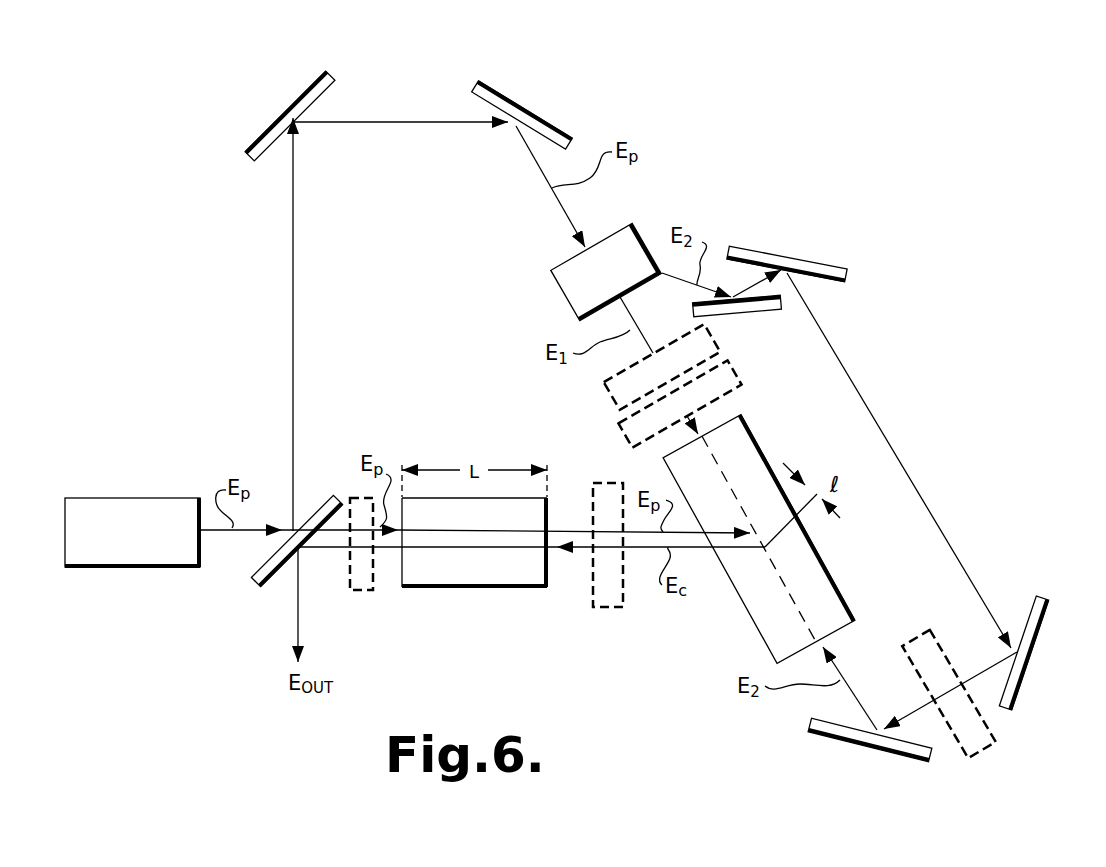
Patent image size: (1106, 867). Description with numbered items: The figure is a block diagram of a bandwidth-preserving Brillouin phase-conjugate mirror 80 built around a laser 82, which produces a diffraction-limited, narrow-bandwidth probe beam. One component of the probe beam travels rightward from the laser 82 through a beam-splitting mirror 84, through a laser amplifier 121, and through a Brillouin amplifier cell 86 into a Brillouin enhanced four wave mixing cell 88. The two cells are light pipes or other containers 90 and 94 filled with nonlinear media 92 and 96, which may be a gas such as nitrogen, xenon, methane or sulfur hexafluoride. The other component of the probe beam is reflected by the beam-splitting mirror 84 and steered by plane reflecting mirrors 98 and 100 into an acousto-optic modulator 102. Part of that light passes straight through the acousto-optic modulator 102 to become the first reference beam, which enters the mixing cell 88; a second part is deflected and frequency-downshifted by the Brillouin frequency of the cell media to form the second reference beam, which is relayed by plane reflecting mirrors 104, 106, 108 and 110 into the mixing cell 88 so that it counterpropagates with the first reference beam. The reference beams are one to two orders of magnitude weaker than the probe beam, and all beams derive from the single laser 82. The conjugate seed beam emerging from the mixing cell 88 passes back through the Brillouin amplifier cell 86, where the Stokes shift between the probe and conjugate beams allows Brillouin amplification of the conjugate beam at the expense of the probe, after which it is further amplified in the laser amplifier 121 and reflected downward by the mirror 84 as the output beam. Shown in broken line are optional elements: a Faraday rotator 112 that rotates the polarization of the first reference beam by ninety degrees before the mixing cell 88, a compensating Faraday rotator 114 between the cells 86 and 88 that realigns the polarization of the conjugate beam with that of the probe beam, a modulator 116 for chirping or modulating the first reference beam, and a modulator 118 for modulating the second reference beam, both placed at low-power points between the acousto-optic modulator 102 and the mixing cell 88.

The bandwidth-preserving Brillouin phase-conjugate mirror 80 is at (748, 160).
The laser 82 is at (137, 498).
The beam-splitting mirror 84 is at (253, 580).
The Brillouin amplifier cell 86 is at (473, 598).
The Brillouin enhanced four wave mixing cell 88 is at (733, 404).
The container 90 is at (533, 587).
The nonlinear medium 92 is at (427, 578).
The container 94 is at (768, 466).
The nonlinear medium 96 is at (740, 443).
The plane reflecting mirror 98 is at (287, 108).
The plane reflecting mirror 100 is at (517, 106).
The acousto-optic modulator 102 is at (643, 228).
The plane reflecting mirror 104 is at (753, 316).
The plane reflecting mirror 106 is at (834, 264).
The plane reflecting mirror 108 is at (1032, 673).
The plane reflecting mirror 110 is at (833, 738).
The Faraday rotator 112 is at (605, 388).
The compensating Faraday rotator 114 is at (612, 607).
The modulator 116 is at (621, 429).
The modulator 118 is at (996, 732).
The laser amplifier 121 is at (352, 590).